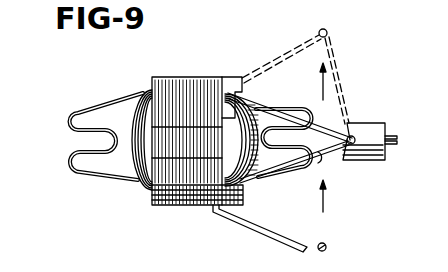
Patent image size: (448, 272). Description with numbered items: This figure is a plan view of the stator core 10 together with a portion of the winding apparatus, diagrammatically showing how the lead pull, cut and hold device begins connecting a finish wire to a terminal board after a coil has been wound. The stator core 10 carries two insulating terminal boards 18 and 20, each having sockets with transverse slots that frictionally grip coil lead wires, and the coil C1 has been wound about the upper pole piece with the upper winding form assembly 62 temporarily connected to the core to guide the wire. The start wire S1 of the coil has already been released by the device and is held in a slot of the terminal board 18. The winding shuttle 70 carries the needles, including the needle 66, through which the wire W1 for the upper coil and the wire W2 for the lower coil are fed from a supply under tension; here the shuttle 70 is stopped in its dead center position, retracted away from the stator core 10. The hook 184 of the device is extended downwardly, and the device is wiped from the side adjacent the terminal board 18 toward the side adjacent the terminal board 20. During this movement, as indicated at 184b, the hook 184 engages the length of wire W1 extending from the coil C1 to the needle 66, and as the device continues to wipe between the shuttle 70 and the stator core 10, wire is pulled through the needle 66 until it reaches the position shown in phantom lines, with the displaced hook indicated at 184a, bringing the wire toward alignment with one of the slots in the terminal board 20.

The stator core 10 is at (202, 77).
The terminal board 20 is at (232, 77).
The terminal board 18 is at (245, 198).
The coil C1 is at (140, 182).
The stator coil start wire S1 is at (232, 228).
The upper winding form assembly 62 is at (302, 106).
The wire W1 is at (278, 109).
The wire W2 is at (323, 158).
The needle 66 is at (354, 124).
The winding ram or shuttle 70 is at (378, 122).
The hook 184 is at (327, 245).
The lever in displaced position 184a is at (327, 30).
The hook position during wipe movement 184b is at (297, 169).